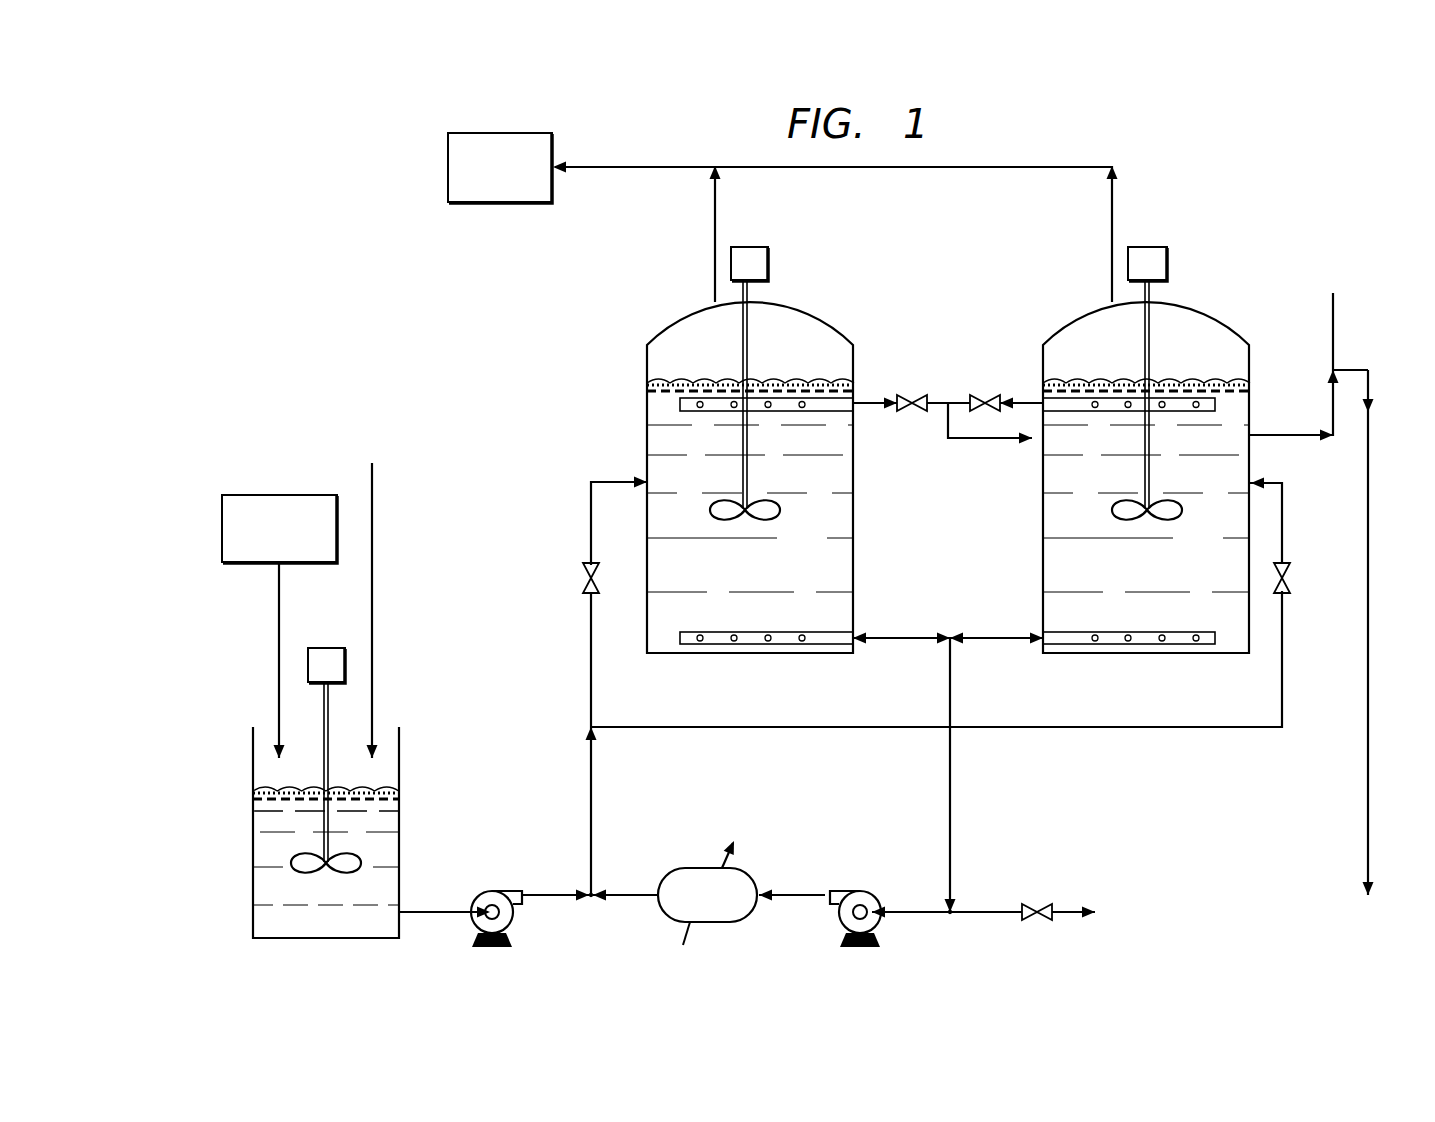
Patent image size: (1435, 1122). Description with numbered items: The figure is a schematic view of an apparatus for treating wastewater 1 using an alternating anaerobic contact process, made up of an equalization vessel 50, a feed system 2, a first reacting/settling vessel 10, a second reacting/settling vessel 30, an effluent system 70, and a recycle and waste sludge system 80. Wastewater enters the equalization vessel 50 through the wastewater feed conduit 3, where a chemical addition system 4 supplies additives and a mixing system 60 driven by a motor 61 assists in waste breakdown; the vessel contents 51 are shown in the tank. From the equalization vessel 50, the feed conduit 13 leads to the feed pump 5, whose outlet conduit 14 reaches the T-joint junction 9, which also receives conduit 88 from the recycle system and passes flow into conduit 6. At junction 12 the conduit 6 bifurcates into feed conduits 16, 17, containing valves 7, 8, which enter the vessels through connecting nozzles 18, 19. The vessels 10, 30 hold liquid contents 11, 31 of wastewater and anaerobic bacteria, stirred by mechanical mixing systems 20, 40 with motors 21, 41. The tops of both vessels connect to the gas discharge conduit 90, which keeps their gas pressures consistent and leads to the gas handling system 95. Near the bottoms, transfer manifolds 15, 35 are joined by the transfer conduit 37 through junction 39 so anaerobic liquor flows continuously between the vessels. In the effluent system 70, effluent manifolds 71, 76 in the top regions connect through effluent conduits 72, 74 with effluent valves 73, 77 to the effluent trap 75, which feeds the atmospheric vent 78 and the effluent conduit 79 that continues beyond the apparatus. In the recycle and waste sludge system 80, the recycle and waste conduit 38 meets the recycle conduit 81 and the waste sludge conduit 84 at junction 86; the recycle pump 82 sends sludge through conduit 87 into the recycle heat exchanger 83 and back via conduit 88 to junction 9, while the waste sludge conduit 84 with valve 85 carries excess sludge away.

The apparatus for treating wastewater 1 is at (305, 280).
The feed system 2 is at (498, 766).
The wastewater feed conduit 3 is at (373, 548).
The chemical addition system 4 is at (222, 527).
The feed pump 5 is at (492, 886).
The conduit 6 is at (588, 794).
The valve 7 is at (575, 578).
The valve 8 is at (1292, 578).
The junction 9 is at (593, 892).
The first reacting/settling vessel 10 is at (721, 477).
The liquid contents 11 is at (826, 567).
The junction 12 is at (586, 727).
The feed conduit 13 is at (447, 915).
The conduit 14 is at (557, 892).
The transfer manifold 15 is at (750, 630).
The feed conduit 16 is at (586, 649).
The feed conduit 17 is at (1100, 730).
The connecting nozzle 18 is at (645, 473).
The connecting nozzle 19 is at (1258, 478).
The mechanical mixing system 20 is at (743, 482).
The motor 21 is at (768, 268).
The second reacting/settling vessel 30 is at (1115, 477).
The liquid contents 31 is at (1223, 567).
The transfer manifold 35 is at (1145, 630).
The transfer conduit 37 is at (900, 635).
The recycle and waste conduit 38 is at (950, 790).
The junction 39 is at (953, 642).
The mechanical mixing system 40 is at (1143, 482).
The motor 41 is at (1167, 268).
The equalization vessel 50 is at (294, 832).
The equalization tank contents 51 is at (343, 920).
The mixing system 60 is at (322, 820).
The motor 61 is at (325, 645).
The effluent system 70 is at (944, 296).
The effluent manifold 71 is at (815, 413).
The effluent conduit 72 is at (868, 400).
The effluent valve 73 is at (910, 397).
The effluent conduit 74 is at (1030, 400).
The effluent trap 75 is at (980, 440).
The effluent manifold 76 is at (1193, 413).
The effluent valve 77 is at (990, 397).
The atmospheric vent 78 is at (1335, 333).
The effluent conduit 79 is at (1369, 640).
The recycle and waste sludge system 80 is at (854, 812).
The recycle conduit 81 is at (915, 908).
The recycle pump 82 is at (881, 930).
The recycle heat exchanger 83 is at (718, 924).
The waste sludge conduit 84 is at (985, 908).
The valve 85 is at (1035, 925).
The junction 86 is at (952, 920).
The conduit 87 is at (790, 890).
The conduit 88 is at (624, 898).
The gas discharge conduit 90 is at (640, 162).
The gas handling system 95 is at (448, 164).